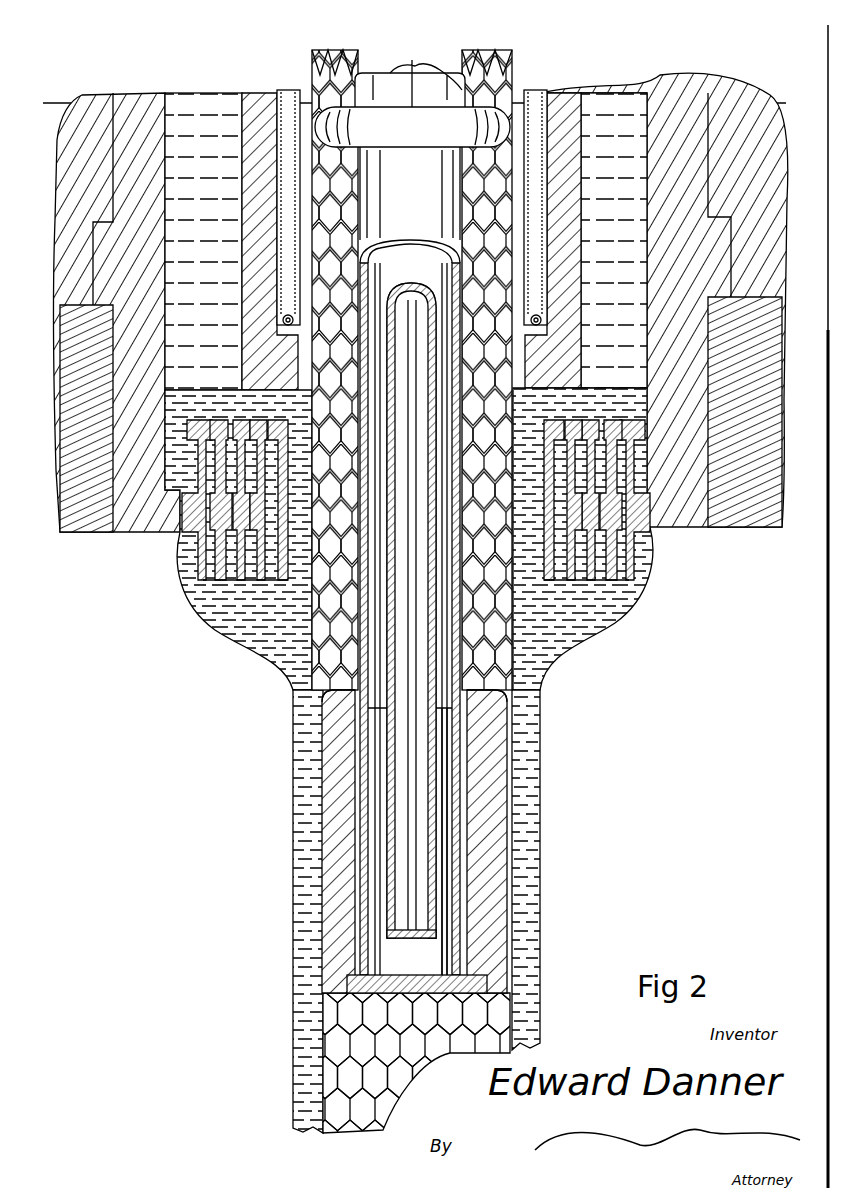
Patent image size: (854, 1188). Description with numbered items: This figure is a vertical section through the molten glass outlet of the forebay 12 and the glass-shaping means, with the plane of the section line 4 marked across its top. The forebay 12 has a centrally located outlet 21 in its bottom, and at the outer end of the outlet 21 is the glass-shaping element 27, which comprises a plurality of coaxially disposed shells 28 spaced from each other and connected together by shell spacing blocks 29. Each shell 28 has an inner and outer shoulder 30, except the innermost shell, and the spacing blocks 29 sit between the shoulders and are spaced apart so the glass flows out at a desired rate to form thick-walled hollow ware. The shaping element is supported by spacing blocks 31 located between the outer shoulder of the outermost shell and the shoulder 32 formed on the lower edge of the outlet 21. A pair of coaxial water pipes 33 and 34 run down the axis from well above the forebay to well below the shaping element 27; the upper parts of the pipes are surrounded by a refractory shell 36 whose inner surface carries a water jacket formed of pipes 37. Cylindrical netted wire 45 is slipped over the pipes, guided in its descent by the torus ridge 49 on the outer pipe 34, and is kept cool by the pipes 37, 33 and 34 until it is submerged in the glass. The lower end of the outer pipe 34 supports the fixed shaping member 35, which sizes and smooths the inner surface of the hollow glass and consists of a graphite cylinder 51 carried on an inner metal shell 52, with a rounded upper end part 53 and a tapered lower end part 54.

The section line 4— 4 is at (43, 100).
The forebay 12 is at (731, 107).
The outlet 21 is at (634, 137).
The glass-shaping element 27 is at (247, 582).
The coaxially disposed shells 28 is at (220, 567).
The shell spacing blocks 29 is at (613, 463).
The inner and outer shoulder 30 is at (193, 440).
The supporting spacing blocks 31 is at (645, 492).
The shoulder 32 is at (642, 458).
The inner water pipe 33 is at (397, 71).
The outer water pipe 34 is at (436, 97).
The shaping member 35 is at (512, 881).
The refractory shell 36 is at (561, 133).
The water jacket pipes 37 is at (287, 133).
The netted wire 45 is at (346, 78).
The torus ridge 49 is at (317, 107).
The graphite cylinder 51 is at (483, 780).
The inner metal shell 52 is at (462, 820).
The rounded upper end part 53 is at (490, 697).
The tapered lower end part 54 is at (483, 977).